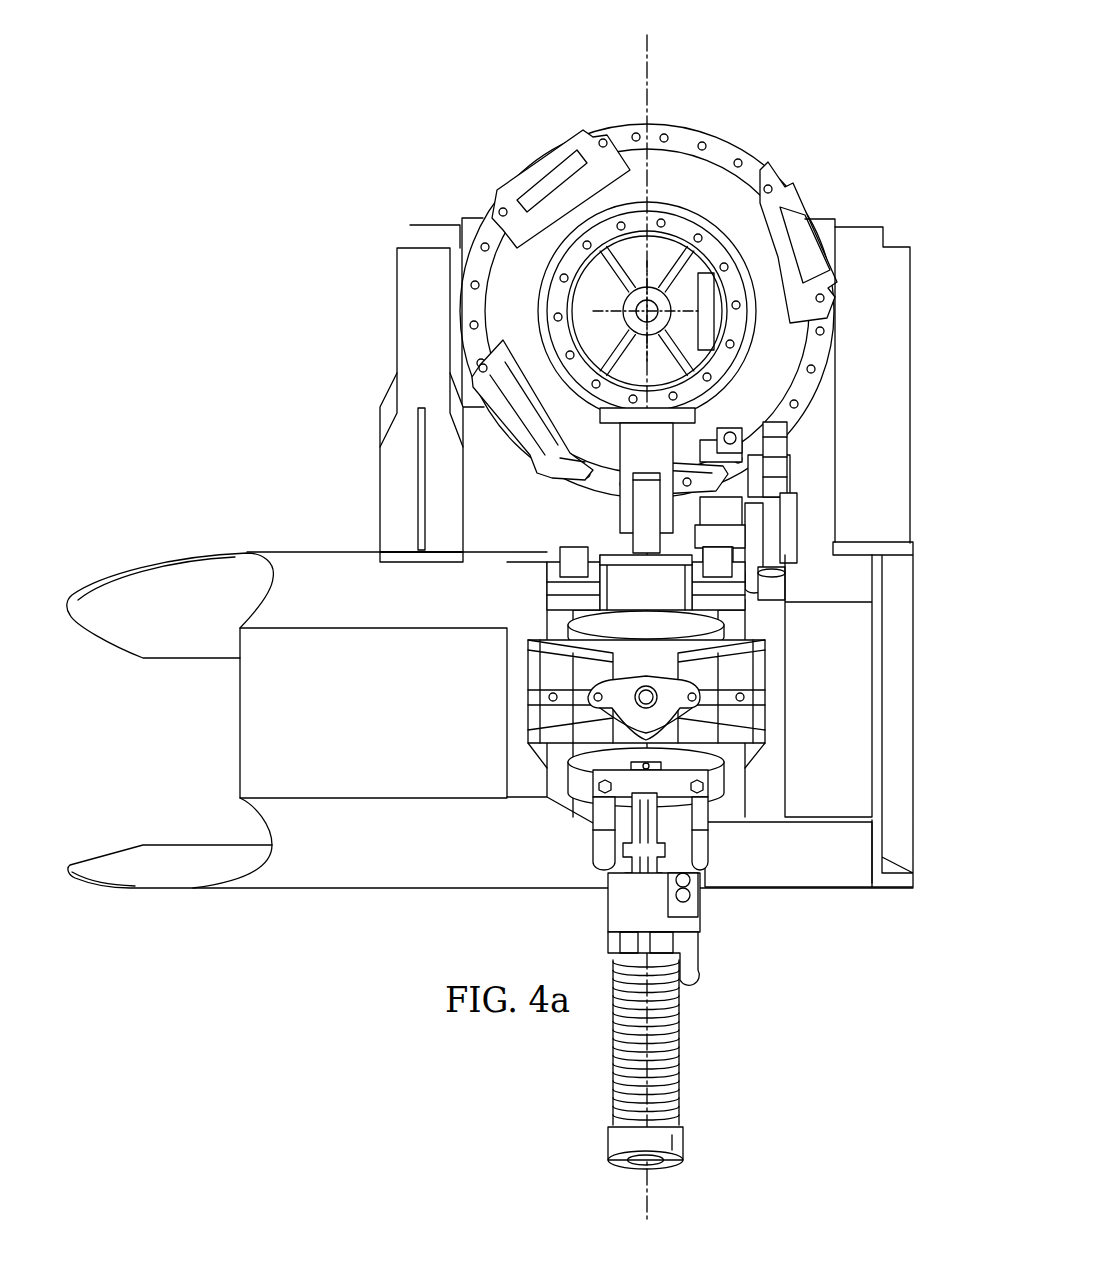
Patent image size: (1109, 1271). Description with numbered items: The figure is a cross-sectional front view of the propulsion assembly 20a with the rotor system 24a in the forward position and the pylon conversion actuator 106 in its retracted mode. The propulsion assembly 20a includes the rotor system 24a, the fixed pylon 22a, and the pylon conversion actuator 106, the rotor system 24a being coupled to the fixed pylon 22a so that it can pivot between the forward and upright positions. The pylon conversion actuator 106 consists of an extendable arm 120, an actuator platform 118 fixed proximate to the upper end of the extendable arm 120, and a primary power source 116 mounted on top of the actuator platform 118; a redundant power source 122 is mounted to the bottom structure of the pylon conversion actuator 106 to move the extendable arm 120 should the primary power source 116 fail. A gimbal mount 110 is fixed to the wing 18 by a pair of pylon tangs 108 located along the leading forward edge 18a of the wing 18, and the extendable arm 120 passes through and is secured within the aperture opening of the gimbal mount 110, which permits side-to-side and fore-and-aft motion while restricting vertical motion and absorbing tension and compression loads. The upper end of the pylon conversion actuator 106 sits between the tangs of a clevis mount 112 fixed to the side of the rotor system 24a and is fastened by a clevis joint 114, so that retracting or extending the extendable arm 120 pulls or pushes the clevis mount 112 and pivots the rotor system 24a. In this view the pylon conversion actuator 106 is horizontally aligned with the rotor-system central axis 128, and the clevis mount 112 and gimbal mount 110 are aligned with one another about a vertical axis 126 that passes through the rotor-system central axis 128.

The wing 18 is at (535, 855).
The leading forward edge 18a is at (867, 758).
The propulsion assembly 20a is at (862, 78).
The fixed pylon 22a is at (905, 318).
The rotor system 24a is at (716, 130).
The pylon conversion actuator 106 is at (480, 698).
The pylon tangs 108 is at (777, 677).
The gimbal mount 110 is at (703, 683).
The clevis mount 112 is at (552, 470).
The clevis joint 114 is at (617, 505).
The primary power source 116 is at (797, 513).
The actuator platform 118 is at (710, 625).
The extendable arm 120 is at (675, 1060).
The redundant power source 122 is at (697, 923).
The vertical axis 126 is at (650, 42).
The rotor-system central axis 128 is at (640, 305).